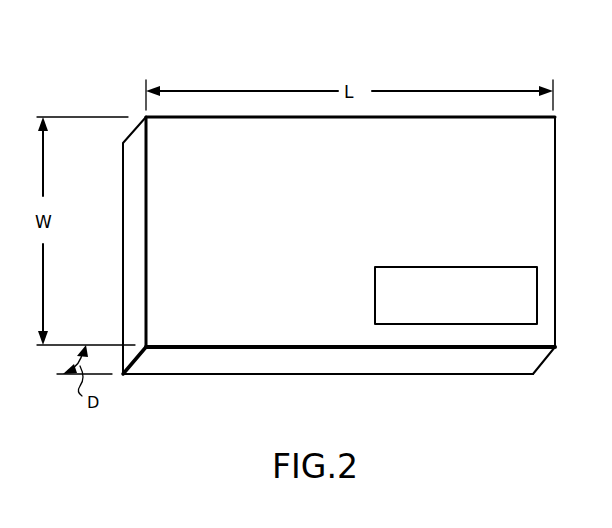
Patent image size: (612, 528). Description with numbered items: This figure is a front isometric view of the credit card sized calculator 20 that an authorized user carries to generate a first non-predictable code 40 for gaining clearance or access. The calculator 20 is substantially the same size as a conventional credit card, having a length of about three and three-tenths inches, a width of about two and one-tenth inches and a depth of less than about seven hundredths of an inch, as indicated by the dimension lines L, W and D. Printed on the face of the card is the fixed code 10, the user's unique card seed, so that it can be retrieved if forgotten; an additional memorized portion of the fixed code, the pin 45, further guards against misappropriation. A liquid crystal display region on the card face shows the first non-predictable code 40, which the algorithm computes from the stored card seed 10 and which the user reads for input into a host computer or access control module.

The credit card sized calculator 20 is at (304, 46).
The fixed code 10 is at (246, 320).
The pin 45 is at (440, 267).
The non-predictable code 40 is at (468, 318).